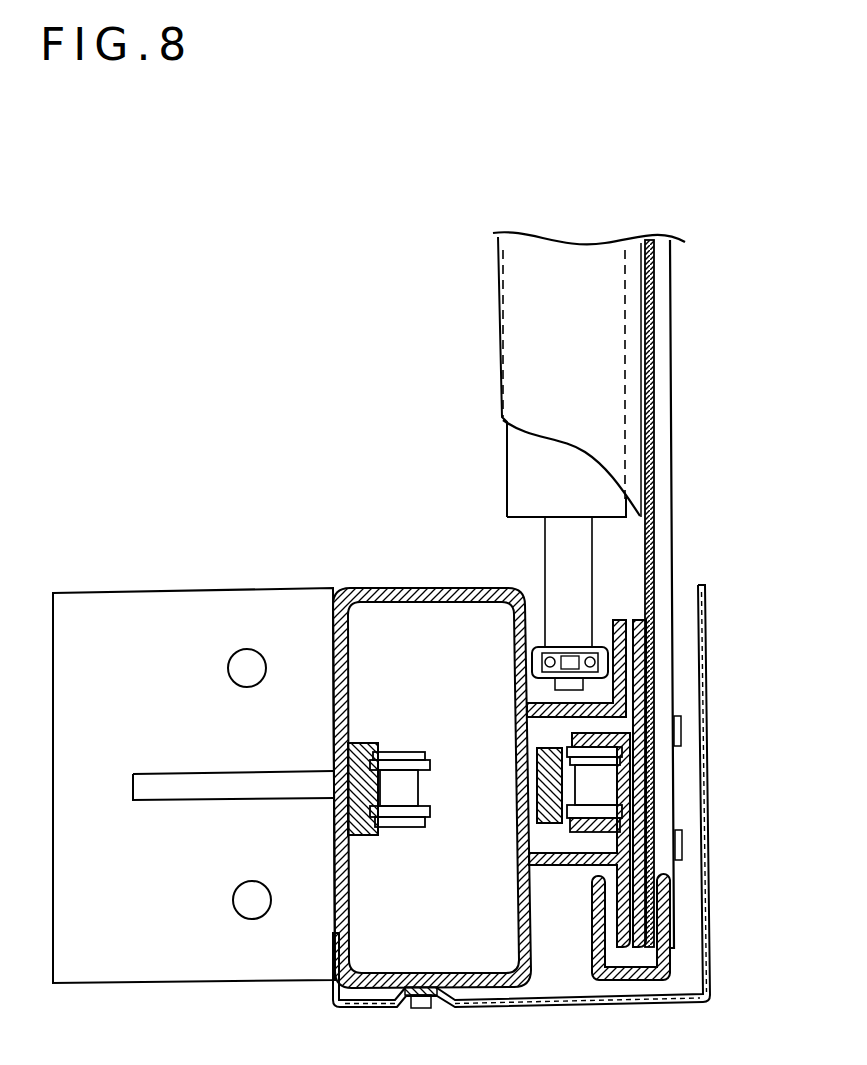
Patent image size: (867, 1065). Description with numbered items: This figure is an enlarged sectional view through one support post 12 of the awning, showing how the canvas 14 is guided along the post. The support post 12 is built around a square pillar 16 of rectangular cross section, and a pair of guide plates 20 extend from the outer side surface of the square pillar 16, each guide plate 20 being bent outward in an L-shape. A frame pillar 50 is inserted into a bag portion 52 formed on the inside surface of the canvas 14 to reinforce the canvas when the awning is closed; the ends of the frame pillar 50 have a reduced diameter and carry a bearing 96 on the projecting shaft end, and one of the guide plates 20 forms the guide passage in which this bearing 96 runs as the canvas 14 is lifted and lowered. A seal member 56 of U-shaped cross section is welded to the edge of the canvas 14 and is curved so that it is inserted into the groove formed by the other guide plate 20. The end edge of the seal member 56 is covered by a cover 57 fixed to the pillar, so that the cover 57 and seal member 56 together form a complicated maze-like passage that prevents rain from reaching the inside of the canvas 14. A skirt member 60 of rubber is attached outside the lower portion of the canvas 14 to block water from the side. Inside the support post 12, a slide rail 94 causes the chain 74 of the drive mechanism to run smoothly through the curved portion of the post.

The support post 12 is at (466, 566).
The canvas 14 is at (655, 342).
The square pillar 16 is at (350, 588).
The guide plate 20 is at (526, 701).
The frame pillar 50 is at (517, 450).
The bag portion 52 is at (498, 323).
The seal member 56 is at (628, 978).
The cover 57 is at (710, 977).
The skirt member 60 is at (676, 468).
The chain 74 is at (400, 752).
The slide rail 94 is at (360, 836).
The bearing 96 is at (536, 662).